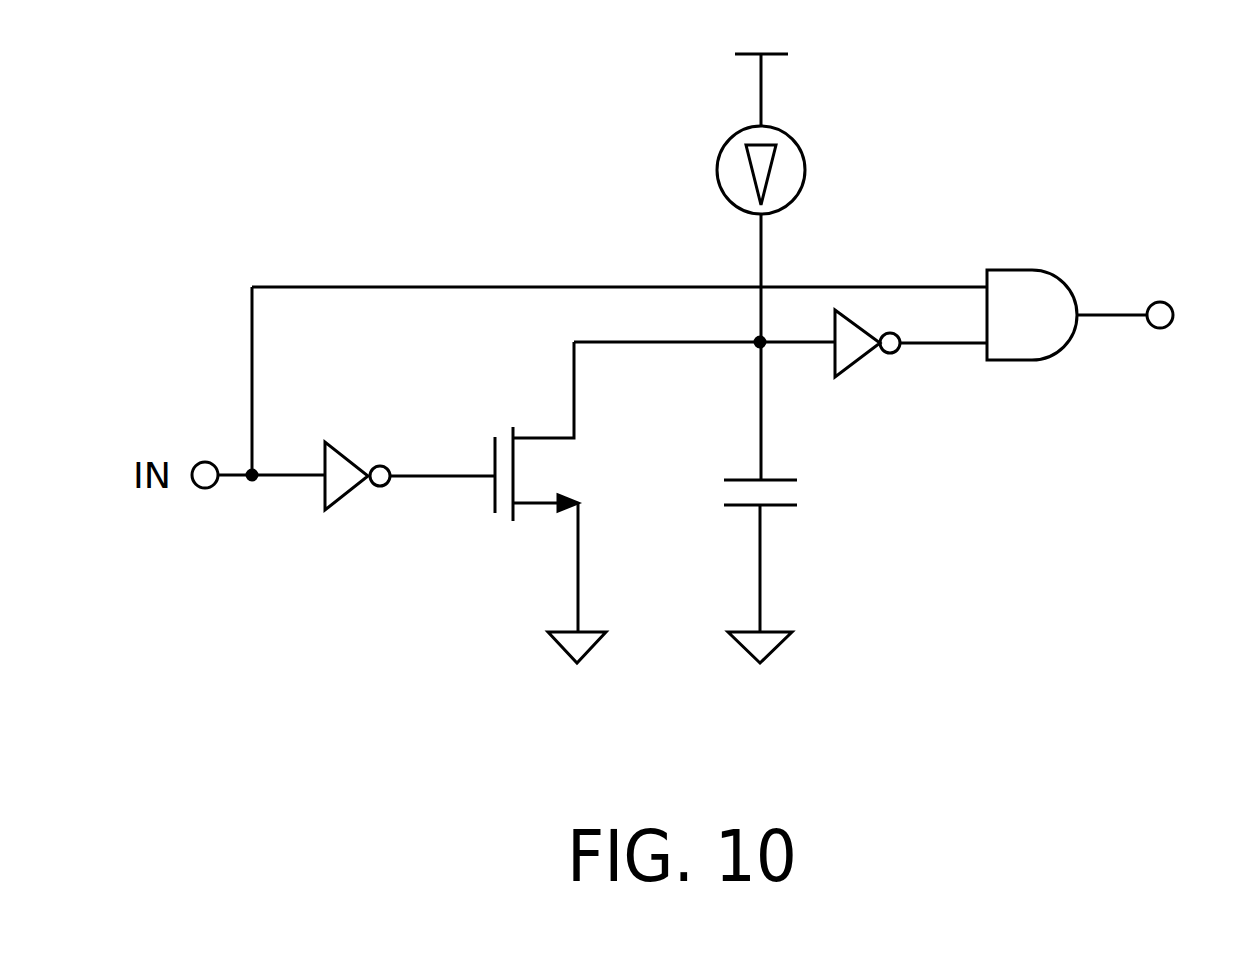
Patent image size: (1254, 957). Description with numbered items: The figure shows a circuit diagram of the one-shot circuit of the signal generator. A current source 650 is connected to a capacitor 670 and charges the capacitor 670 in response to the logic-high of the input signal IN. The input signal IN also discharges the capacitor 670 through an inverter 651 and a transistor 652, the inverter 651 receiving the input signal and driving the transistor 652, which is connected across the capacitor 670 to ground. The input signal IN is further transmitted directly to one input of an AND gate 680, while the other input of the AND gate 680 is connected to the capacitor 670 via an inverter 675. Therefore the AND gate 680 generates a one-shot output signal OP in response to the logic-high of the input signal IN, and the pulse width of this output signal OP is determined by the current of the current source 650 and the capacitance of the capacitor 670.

The current source 650 is at (808, 183).
The inverter 651 is at (355, 452).
The transistor 652 is at (577, 472).
The capacitor 670 is at (797, 494).
The inverter 675 is at (860, 368).
The AND gate 680 is at (1022, 266).